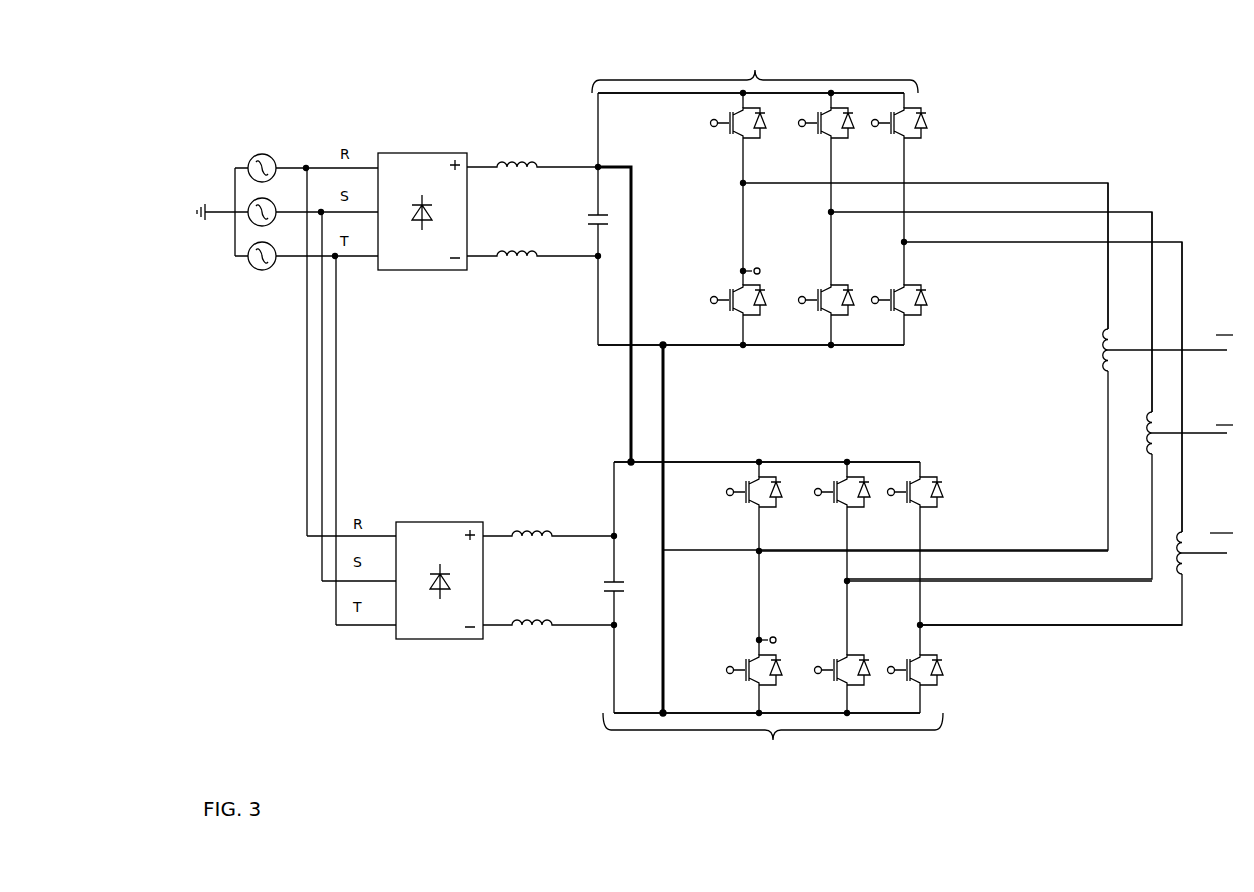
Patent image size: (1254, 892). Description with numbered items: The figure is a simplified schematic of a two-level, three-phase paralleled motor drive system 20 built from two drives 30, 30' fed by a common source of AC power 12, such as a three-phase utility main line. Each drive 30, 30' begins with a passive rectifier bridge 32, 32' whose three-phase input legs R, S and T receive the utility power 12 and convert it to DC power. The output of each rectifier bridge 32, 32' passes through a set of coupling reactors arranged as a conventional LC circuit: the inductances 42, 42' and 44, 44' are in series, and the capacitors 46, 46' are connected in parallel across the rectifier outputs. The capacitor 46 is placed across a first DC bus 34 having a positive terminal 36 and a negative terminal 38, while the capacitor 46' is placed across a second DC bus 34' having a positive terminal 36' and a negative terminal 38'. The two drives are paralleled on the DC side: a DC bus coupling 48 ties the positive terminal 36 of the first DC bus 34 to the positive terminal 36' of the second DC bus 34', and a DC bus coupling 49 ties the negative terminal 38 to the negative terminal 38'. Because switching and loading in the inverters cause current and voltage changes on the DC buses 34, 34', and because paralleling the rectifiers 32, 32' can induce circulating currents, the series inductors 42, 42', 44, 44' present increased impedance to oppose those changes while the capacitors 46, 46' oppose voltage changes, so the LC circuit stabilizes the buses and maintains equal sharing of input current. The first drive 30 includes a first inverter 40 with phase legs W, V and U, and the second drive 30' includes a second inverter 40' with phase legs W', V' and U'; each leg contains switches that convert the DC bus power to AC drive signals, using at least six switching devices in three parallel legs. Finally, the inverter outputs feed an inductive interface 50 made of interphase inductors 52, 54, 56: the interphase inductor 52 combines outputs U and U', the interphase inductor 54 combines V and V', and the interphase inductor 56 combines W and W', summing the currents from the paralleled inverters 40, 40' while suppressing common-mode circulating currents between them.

The source of AC power 12 is at (270, 147).
The motor drive system 20 is at (1145, 119).
The first drive 30 is at (729, 297).
The second drive 30' is at (744, 631).
The rectifier bridge 32 is at (422, 170).
The rectifier bridge 32' is at (439, 543).
The first DC bus 34 is at (705, 187).
The second DC bus 34' is at (725, 540).
The positive terminal 36 is at (715, 119).
The positive terminal 36' is at (732, 470).
The negative terminal 38 is at (751, 388).
The negative terminal 38' is at (719, 708).
The first inverter 40 is at (759, 188).
The second inverter 40' is at (773, 622).
The inductance 42 is at (532, 133).
The inductance 42' is at (548, 490).
The inductance 44 is at (532, 291).
The inductance 44' is at (544, 661).
The capacitor 46 is at (558, 212).
The capacitor 46' is at (573, 581).
The DC bus coupling 48 is at (632, 372).
The DC bus coupling 49 is at (663, 407).
The inductive interface 50 is at (1038, 365).
The interphase inductor 52 is at (1100, 345).
The interphase inductor 54 is at (1145, 445).
The interphase inductor 56 is at (1185, 548).